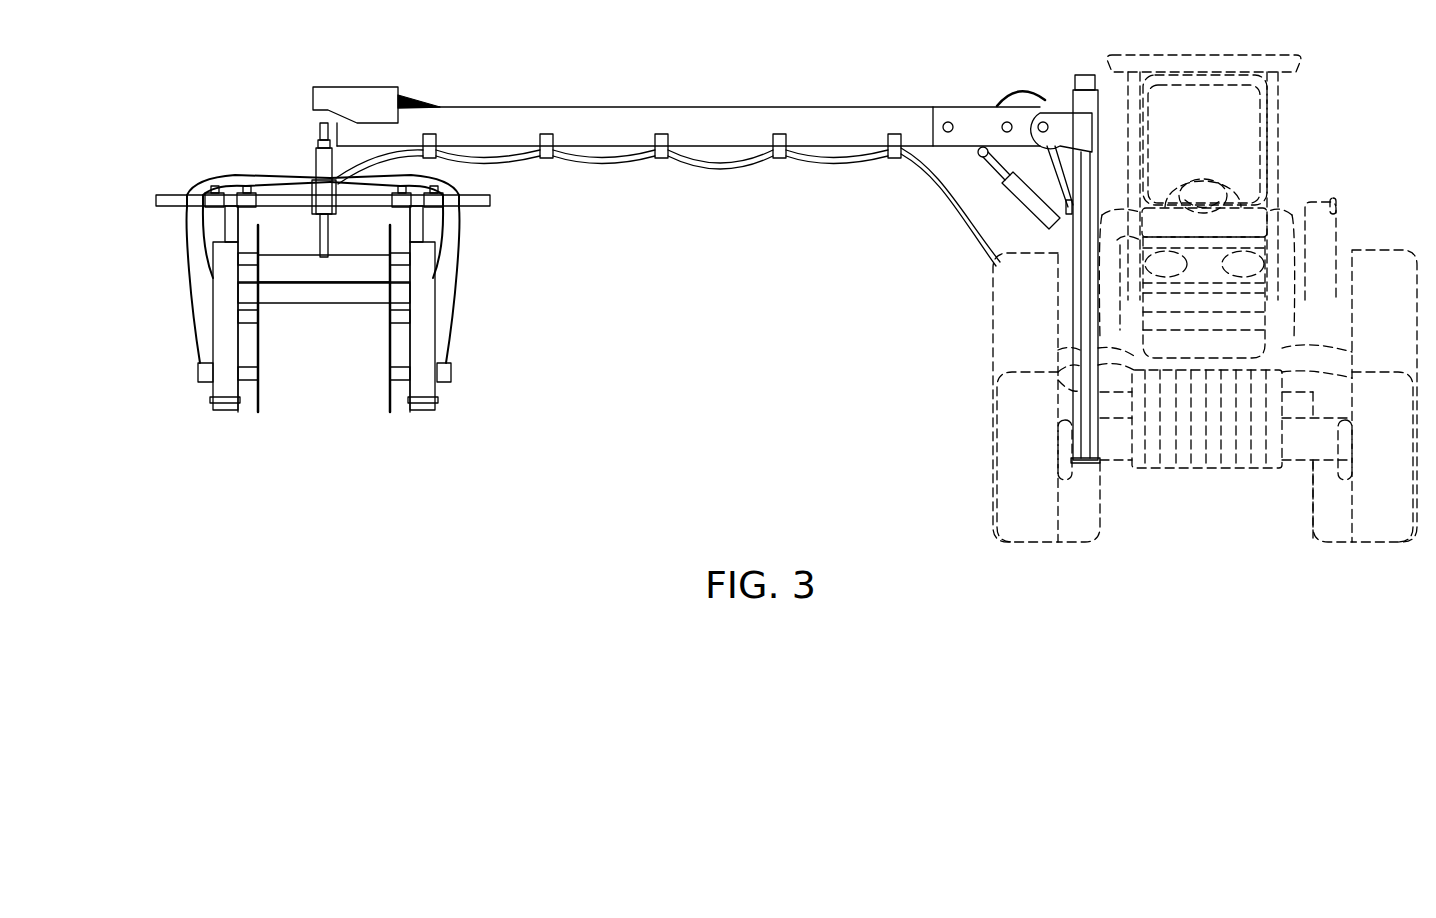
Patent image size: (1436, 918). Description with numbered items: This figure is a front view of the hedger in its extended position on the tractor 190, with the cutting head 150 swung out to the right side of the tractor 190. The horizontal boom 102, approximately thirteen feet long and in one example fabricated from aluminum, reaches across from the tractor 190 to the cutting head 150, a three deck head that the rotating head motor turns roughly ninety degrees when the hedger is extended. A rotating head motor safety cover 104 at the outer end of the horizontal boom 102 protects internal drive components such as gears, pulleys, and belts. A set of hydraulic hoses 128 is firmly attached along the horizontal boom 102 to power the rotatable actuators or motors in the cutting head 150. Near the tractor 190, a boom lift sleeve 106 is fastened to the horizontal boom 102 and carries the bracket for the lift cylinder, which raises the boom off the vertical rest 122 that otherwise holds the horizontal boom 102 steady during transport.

The horizontal boom 102 is at (712, 107).
The rotating head motor safety cover 104 is at (372, 87).
The boom lift sleeve 106 is at (1040, 100).
The vertical rest 122 is at (1085, 236).
The hydraulic hoses 128 is at (720, 163).
The cutting head 150 is at (505, 270).
The tractor 190 is at (1228, 472).